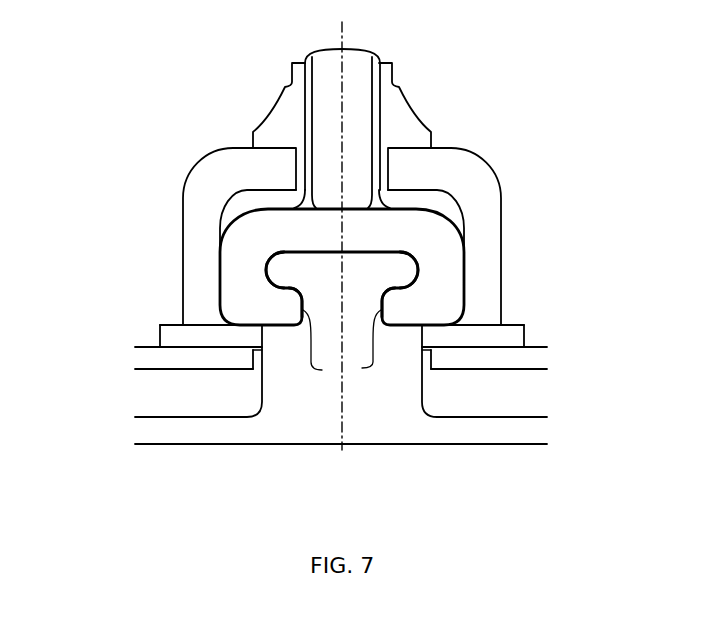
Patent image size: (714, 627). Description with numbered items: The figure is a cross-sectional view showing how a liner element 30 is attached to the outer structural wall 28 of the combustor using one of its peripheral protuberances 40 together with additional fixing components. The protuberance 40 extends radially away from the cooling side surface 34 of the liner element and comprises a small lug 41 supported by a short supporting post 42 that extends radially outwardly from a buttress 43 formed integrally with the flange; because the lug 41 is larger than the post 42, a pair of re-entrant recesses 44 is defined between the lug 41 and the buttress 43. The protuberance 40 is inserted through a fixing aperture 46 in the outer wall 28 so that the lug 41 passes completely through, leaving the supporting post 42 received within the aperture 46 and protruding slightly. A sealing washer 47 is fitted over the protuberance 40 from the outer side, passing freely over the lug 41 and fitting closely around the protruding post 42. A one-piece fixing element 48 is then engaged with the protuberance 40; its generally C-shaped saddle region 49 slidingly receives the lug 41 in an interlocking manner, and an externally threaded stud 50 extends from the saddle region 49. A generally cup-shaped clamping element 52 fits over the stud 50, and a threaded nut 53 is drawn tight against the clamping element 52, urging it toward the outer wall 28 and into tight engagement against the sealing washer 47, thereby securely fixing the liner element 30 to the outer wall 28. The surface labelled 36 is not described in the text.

The liner element 30 is at (168, 480).
The externally threaded stud 50 is at (363, 94).
The threaded nut 53 is at (403, 118).
The fixing element 48 is at (293, 205).
The clamping element 52 is at (456, 167).
The saddle region 49 is at (407, 222).
The lug 41 is at (392, 265).
The protuberance 40 is at (265, 258).
The supporting post 42 is at (365, 305).
The re-entrant recesses 44 is at (342, 345).
The sealing washer 47 is at (518, 335).
The outer structural wall 28 is at (157, 360).
The fixing aperture 46 is at (240, 359).
The buttress 43 is at (282, 382).
The cooling side surface 34 is at (520, 416).
The base surface 36 is at (483, 444).